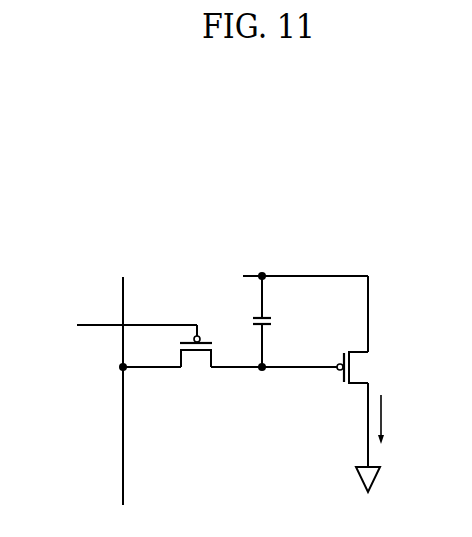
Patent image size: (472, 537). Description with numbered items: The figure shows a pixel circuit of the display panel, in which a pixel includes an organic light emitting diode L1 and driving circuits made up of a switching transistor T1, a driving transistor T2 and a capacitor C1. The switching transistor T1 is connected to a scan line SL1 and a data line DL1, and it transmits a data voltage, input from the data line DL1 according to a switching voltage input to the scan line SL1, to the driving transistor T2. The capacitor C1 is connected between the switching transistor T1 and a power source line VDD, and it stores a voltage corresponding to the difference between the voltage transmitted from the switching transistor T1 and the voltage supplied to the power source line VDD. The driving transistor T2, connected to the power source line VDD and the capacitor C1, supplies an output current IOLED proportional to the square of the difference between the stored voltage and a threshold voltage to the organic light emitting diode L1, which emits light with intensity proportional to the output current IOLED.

The data line DL1 is at (126, 376).
The scan line SL1 is at (117, 327).
The switching transistor T1 is at (192, 367).
The driving transistor T2 is at (327, 367).
The capacitor C1 is at (277, 323).
The power source line VDD is at (311, 298).
The output current IOLED is at (406, 419).
The organic light emitting diode L1 is at (368, 453).